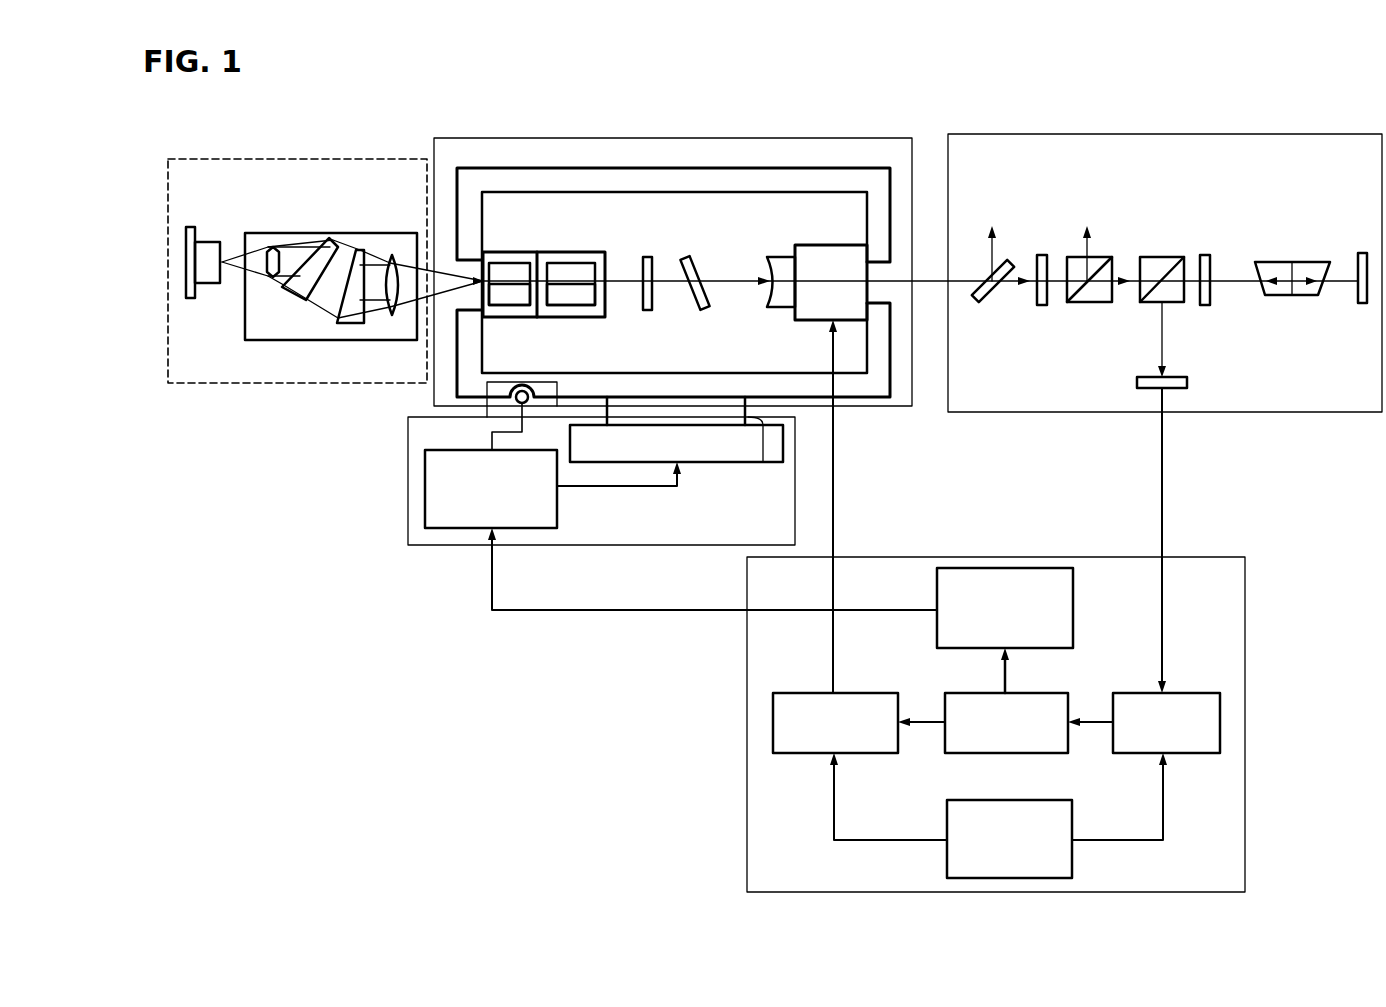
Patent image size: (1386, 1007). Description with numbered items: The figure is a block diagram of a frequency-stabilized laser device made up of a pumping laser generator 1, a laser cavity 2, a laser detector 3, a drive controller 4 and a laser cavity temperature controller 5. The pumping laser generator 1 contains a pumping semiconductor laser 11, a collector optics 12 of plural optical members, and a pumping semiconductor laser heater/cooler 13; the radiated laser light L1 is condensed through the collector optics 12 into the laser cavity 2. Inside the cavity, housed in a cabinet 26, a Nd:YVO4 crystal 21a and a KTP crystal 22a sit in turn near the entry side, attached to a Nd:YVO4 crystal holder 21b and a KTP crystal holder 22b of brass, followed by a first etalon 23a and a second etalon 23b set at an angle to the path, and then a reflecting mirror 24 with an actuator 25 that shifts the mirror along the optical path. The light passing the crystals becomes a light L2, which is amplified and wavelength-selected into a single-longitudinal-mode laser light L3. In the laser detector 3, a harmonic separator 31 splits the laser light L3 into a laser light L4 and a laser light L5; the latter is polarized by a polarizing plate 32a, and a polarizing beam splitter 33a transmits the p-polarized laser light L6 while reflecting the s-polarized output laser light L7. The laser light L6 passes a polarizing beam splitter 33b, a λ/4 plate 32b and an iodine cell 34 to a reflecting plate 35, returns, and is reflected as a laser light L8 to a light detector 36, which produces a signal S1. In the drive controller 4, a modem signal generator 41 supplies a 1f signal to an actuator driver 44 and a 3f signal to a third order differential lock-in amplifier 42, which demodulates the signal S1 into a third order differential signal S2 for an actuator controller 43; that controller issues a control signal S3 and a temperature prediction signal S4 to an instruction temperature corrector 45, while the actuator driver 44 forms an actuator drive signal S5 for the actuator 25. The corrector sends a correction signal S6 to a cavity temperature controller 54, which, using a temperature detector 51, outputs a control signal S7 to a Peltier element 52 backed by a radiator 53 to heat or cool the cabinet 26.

The pumping laser generator 1 is at (284, 158).
The pumping semiconductor laser 11 is at (208, 242).
The collector optics 12 is at (320, 233).
The pumping semiconductor laser heater/cooler 13 is at (191, 298).
The laser light L1 is at (235, 276).
The laser cavity 2 is at (680, 138).
The cabinet 26 is at (553, 168).
The Nd:YVO4 crystal 21a is at (508, 263).
The Nd:YVO4 crystal holder 21b is at (508, 317).
The KTP crystal 22a is at (575, 263).
The KTP crystal holder 22b is at (583, 317).
The first etalon 23a is at (646, 257).
The second etalon 23b is at (692, 258).
The reflecting mirror 24 is at (775, 257).
The actuator 25 is at (830, 245).
The light L2 is at (616, 288).
The laser detector 3 is at (1156, 134).
The harmonic separator 31 is at (1010, 265).
The polarizing plate 32a is at (1040, 255).
The λ/4 plate 32b is at (1203, 255).
The polarizing beam splitter 33a is at (1100, 262).
The polarizing beam splitter 33b is at (1160, 257).
The iodine cell 34 is at (1292, 262).
The reflecting plate 35 is at (1362, 253).
The light detector 36 is at (1188, 382).
The laser light L3 is at (958, 284).
The laser light L4 is at (991, 250).
The laser light L5 is at (1020, 284).
The laser light L6 is at (1128, 284).
The laser light L7 is at (1087, 250).
The laser light L8 is at (1166, 335).
The drive controller 4 is at (996, 557).
The modem signal generator 41 is at (1010, 800).
The third order differential lock-in amplifier 42 is at (1201, 693).
The actuator controller 43 is at (1037, 693).
The actuator driver 44 is at (794, 693).
The instruction temperature corrector 45 is at (1073, 612).
The laser cavity temperature controller 5 is at (408, 453).
The temperature detector 51 is at (517, 403).
The Peltier element 52 is at (763, 462).
The radiator 53 is at (708, 462).
The cavity temperature controller 54 is at (425, 498).
The signal S1 is at (1168, 487).
The third order differential signal S2 is at (1090, 724).
The control signal S3 is at (920, 724).
The temperature prediction signal S4 is at (1002, 674).
The actuator drive signal S5 is at (838, 488).
The correction signal S6 is at (887, 611).
The control signal S7 is at (619, 488).
The 1 f-Hz frequency signal 1f is at (888, 796).
The 3 f-Hz frequency signal 3f is at (1119, 796).